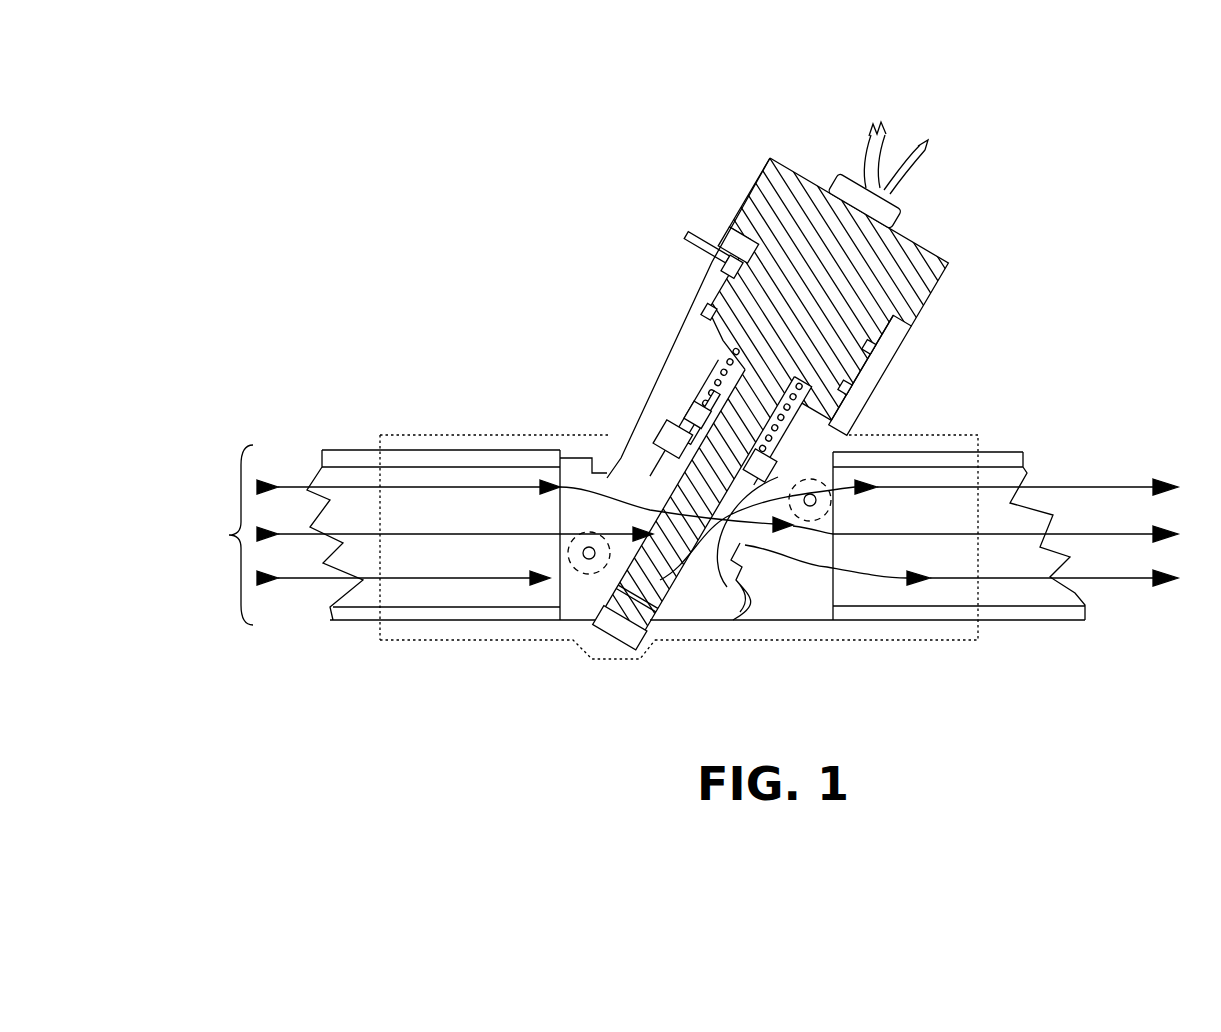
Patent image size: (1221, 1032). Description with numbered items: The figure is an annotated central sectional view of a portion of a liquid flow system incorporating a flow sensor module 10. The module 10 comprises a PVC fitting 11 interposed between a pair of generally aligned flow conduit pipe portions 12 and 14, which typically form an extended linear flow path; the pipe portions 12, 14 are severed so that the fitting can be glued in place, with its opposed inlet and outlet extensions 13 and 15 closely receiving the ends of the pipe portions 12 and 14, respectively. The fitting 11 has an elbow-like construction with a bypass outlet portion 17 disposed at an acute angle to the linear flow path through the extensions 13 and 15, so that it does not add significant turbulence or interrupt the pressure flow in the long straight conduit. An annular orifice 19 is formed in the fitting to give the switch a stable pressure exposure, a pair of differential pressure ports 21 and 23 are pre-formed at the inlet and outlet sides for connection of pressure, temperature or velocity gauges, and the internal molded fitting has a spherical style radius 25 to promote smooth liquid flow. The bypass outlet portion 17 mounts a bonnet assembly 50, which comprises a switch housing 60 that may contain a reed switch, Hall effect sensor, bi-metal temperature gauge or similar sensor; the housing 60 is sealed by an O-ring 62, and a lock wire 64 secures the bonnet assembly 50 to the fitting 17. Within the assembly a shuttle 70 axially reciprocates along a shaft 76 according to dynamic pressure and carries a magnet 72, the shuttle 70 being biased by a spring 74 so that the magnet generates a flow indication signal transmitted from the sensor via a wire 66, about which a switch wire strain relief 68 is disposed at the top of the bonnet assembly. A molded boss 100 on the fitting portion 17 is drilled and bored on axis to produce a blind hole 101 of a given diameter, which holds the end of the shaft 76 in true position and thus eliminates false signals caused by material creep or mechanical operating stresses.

The flow sensor module 10 is at (703, 440).
The PVC fitting 11 is at (727, 533).
The flow conduit pipe portion 12 is at (360, 455).
The inlet extension 13 is at (417, 610).
The flow conduit pipe portion 14 is at (1028, 612).
The outlet extension 15 is at (932, 454).
The bypass outlet portion 17 is at (887, 350).
The annular orifice 19 is at (605, 478).
The differential pressure port 21 is at (595, 556).
The differential pressure port 23 is at (808, 507).
The spherical style radius 25 is at (737, 492).
The bonnet assembly 50 is at (750, 440).
The switch housing 60 is at (738, 198).
The O-ring 62 is at (700, 303).
The lock wire 64 is at (725, 248).
The wire 66 is at (868, 128).
The switch wire strain relief 68 is at (822, 172).
The shuttle 70 is at (652, 428).
The magnet 72 is at (680, 412).
The spring 74 is at (700, 382).
The shaft 76 is at (608, 478).
The boss 100 is at (637, 642).
The blind hole 101 is at (603, 645).